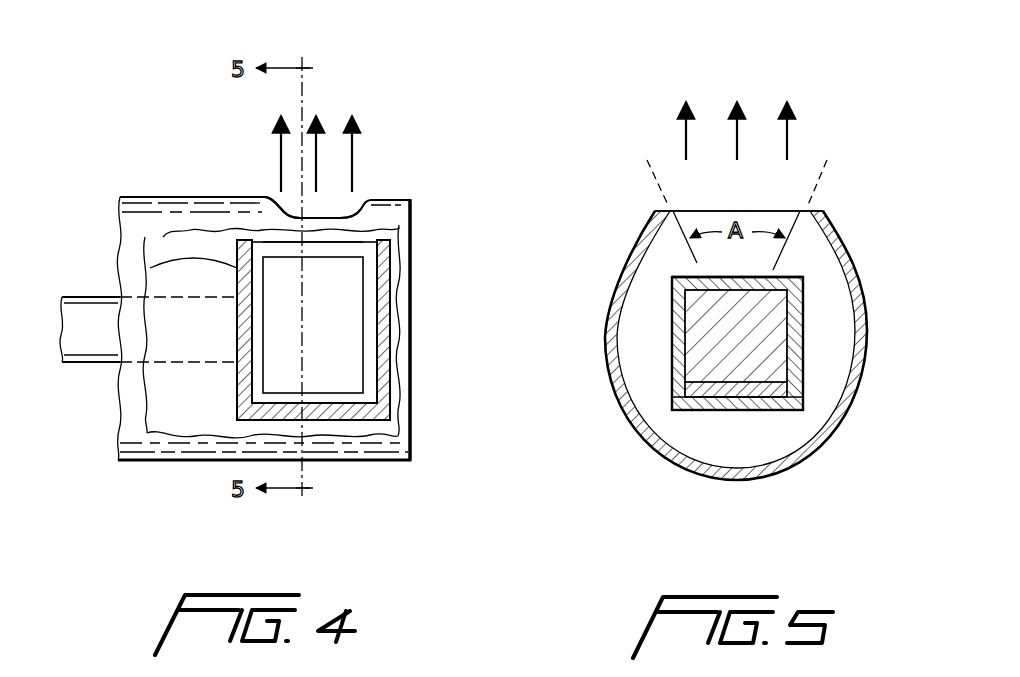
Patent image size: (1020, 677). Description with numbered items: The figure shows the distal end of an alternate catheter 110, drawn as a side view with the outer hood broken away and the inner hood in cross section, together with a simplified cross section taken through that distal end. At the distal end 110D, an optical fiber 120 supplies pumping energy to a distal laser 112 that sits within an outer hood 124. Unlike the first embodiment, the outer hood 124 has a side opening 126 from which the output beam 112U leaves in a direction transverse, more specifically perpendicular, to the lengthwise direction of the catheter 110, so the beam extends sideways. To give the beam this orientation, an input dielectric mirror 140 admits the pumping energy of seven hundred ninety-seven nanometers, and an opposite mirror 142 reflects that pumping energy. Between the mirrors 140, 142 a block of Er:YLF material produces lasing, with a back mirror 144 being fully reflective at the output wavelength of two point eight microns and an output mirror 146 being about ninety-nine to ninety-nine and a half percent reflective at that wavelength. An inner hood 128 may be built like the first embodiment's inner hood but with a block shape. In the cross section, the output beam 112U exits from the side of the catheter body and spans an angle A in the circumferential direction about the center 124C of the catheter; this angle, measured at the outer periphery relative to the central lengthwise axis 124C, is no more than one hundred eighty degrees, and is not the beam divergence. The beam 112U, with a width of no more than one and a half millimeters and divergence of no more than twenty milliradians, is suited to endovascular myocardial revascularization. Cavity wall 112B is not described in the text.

In FIG. 4, the catheter 110 is at (338, 547).
In FIG. 4, the distal end 110D is at (410, 222).
In FIG. 4, the distal laser 112 is at (303, 382).
In FIG. 4, the cavity bottom wall 112B is at (350, 287).
In FIG. 5, the cavity bottom wall 112B is at (697, 372).
In FIG. 4, the output beam 112U is at (290, 157).
In FIG. 5, the output beam 112U is at (737, 125).
In FIG. 4, the optical fiber 120 is at (93, 362).
In FIG. 4, the outer hood 124 is at (190, 462).
In FIG. 5, the outer hood 124 is at (797, 490).
In FIG. 5, the center 124C is at (735, 342).
In FIG. 4, the side opening 126 is at (274, 202).
In FIG. 5, the side opening 126 is at (786, 211).
In FIG. 4, the inner hood 128 is at (155, 270).
In FIG. 5, the inner hood 128 is at (803, 400).
In FIG. 4, the input dielectric mirror 140 is at (237, 393).
In FIG. 4, the opposite mirror 142 is at (370, 345).
In FIG. 4, the back mirror 144 is at (350, 395).
In FIG. 5, the back mirror 144 is at (703, 390).
In FIG. 4, the output mirror 146 is at (353, 247).
In FIG. 5, the output mirror 146 is at (693, 277).